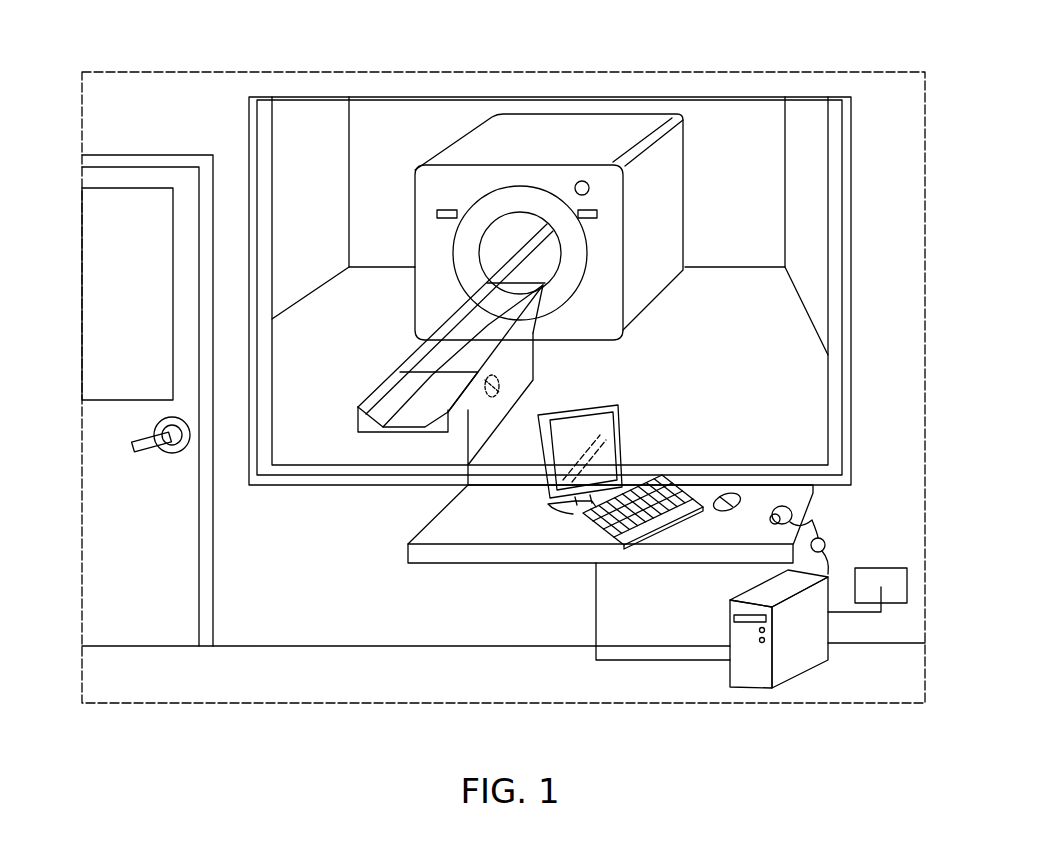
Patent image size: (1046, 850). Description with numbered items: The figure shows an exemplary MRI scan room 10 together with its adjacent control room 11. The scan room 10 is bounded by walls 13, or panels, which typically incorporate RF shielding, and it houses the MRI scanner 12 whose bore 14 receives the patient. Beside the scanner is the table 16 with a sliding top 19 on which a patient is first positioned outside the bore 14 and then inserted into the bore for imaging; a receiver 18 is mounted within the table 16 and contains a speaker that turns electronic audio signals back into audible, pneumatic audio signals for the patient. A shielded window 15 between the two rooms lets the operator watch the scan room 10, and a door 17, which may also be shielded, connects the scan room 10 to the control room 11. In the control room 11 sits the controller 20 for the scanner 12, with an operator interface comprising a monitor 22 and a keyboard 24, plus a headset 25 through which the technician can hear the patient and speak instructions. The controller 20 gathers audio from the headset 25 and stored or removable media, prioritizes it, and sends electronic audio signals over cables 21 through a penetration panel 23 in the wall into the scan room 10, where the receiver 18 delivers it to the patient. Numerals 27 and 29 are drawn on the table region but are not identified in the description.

The scan room 10 is at (296, 112).
The control room 11 is at (318, 688).
The MRI scanner 12 is at (650, 280).
The wall 13 is at (316, 270).
The bore 14 is at (487, 252).
The window 15 is at (842, 400).
The table 16 is at (536, 376).
The door 17 is at (131, 540).
The receiver 18 is at (498, 393).
The sliding top 19 is at (466, 340).
The controller 20 is at (803, 660).
The cables 21 is at (855, 622).
The monitor 22 is at (548, 498).
The penetration panel 23 is at (880, 568).
The keyboard 24 is at (675, 515).
The headset 25 is at (813, 523).
The table top 27 is at (447, 325).
The cushion 29 is at (420, 382).